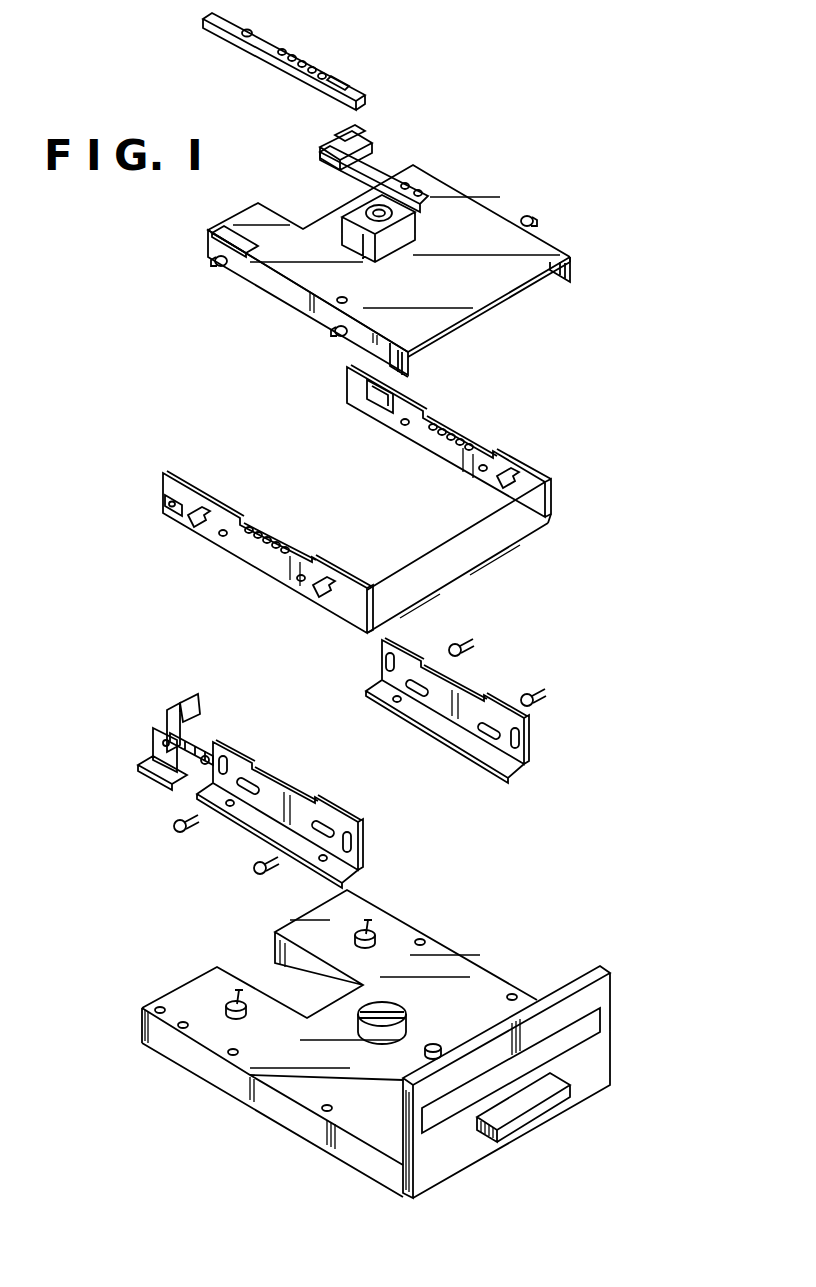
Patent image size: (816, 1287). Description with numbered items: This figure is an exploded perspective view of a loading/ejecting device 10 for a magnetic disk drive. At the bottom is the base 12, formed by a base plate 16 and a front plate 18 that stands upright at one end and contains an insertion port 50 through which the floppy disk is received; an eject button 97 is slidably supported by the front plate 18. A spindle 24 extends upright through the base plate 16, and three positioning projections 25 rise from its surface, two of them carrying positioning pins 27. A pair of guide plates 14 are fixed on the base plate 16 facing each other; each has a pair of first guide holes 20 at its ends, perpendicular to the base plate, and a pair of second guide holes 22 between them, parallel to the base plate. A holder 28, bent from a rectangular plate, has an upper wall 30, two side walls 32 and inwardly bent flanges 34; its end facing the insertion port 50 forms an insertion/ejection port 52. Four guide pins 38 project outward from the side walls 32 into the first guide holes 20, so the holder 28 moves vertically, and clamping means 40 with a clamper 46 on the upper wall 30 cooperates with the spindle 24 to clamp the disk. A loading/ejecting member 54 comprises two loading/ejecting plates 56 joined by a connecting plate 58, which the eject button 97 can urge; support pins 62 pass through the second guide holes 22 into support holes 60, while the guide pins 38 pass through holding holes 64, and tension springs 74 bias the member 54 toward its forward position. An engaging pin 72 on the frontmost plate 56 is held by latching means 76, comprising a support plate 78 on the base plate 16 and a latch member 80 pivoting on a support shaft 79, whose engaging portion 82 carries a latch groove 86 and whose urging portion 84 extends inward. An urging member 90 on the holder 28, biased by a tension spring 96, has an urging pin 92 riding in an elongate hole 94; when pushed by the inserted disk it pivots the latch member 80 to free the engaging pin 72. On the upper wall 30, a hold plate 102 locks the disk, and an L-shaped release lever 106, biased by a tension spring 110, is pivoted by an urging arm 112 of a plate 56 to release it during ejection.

The loading/ejecting device 10 is at (572, 580).
The base 12 is at (376, 1044).
The guide plates 14 is at (380, 763).
The base plate 16 is at (207, 1070).
The front plate 18 is at (506, 1069).
The first guide holes 20 is at (385, 665).
The second guide holes 22 is at (415, 696).
The spindle 24 is at (398, 1011).
The positioning projections 25 is at (372, 943).
The positioning pins 27 is at (366, 928).
The holder 28 is at (380, 267).
The upper wall 30 is at (484, 300).
The side walls 32 is at (278, 292).
The flanges 34 is at (565, 283).
The guide pins 38 is at (213, 265).
The clamping means 40 is at (416, 242).
The clamper 46 is at (383, 250).
The insertion port 50 is at (453, 1117).
The insertion/ejection port 52 is at (532, 308).
The loading/ejecting member 54 is at (363, 499).
The loading/ejecting plates 56 is at (518, 462).
The connecting plate 58 is at (470, 558).
The support holes 60 is at (403, 426).
The support pins 62 is at (466, 649).
The holding holes 64 is at (509, 486).
The engaging pin 72 is at (168, 511).
The tension springs 74 is at (455, 434).
The latching means 76 is at (157, 739).
The support plate 78 is at (155, 746).
The support shaft 79 is at (162, 770).
The latch member 80 is at (169, 716).
The engaging portion 82 is at (203, 765).
The urging portion 84 is at (190, 700).
The latch groove 86 is at (198, 745).
The urging member 90 is at (284, 61).
The urging pin 92 is at (245, 45).
The elongate hole 94 is at (250, 244).
The tension spring 96 is at (318, 70).
The eject button 97 is at (520, 1110).
The hold plate 102 is at (350, 164).
The release lever 106 is at (322, 157).
The tension spring 110 is at (338, 144).
The urging arm 112 is at (370, 404).